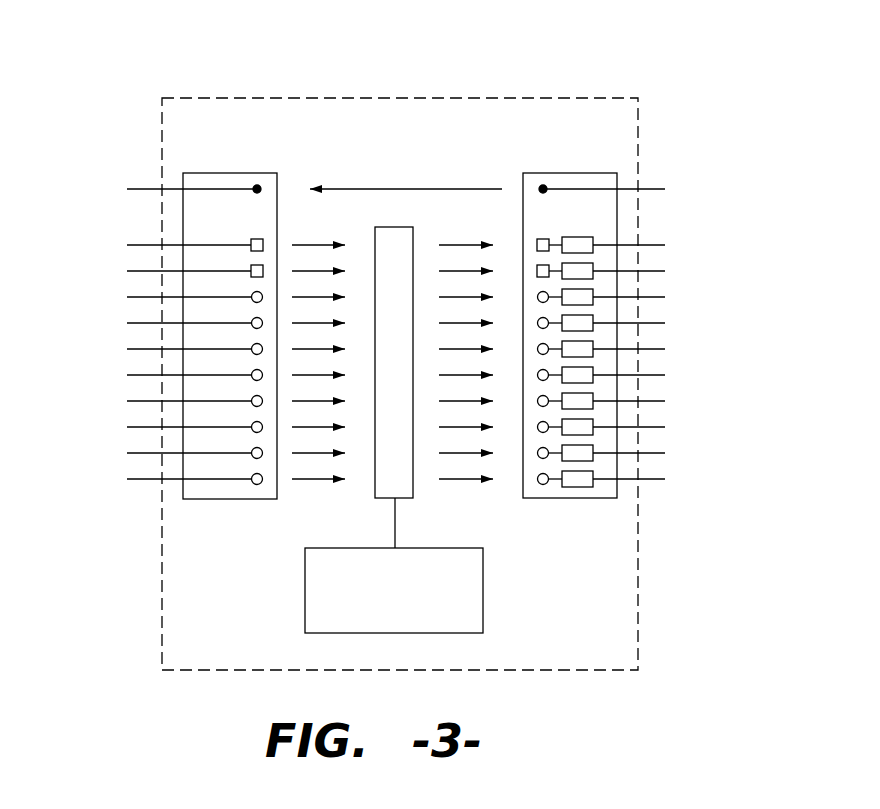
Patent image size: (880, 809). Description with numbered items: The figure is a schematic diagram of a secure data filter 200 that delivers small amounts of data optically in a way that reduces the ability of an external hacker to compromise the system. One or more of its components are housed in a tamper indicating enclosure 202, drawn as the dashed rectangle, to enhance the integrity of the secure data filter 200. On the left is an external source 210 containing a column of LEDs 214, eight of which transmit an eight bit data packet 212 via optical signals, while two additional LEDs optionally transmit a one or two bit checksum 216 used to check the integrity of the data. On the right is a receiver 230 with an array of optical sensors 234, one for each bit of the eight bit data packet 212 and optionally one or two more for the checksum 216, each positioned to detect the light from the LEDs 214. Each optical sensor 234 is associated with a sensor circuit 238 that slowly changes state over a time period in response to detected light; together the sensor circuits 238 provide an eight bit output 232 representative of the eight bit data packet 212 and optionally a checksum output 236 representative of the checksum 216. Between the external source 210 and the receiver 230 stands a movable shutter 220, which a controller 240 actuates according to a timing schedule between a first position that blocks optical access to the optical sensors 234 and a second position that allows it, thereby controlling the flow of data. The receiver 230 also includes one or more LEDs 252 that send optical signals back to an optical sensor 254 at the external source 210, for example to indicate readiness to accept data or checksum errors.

The secure data filter 200 is at (703, 94).
The tamper indicating enclosure 202 is at (562, 97).
The external source 210 is at (237, 173).
The eight bit data packet 212 is at (112, 286).
The LEDs 214 is at (256, 485).
The checksum 216 is at (112, 233).
The movable shutter 220 is at (413, 482).
The receiver 230 is at (570, 173).
The eight bit output 232 is at (679, 287).
The optical sensors 234 is at (541, 483).
The checksum output 236 is at (679, 233).
The sensor circuit 238 is at (572, 488).
The controller 240 is at (483, 585).
The LEDs 252 is at (540, 190).
The optical sensor 254 is at (262, 188).